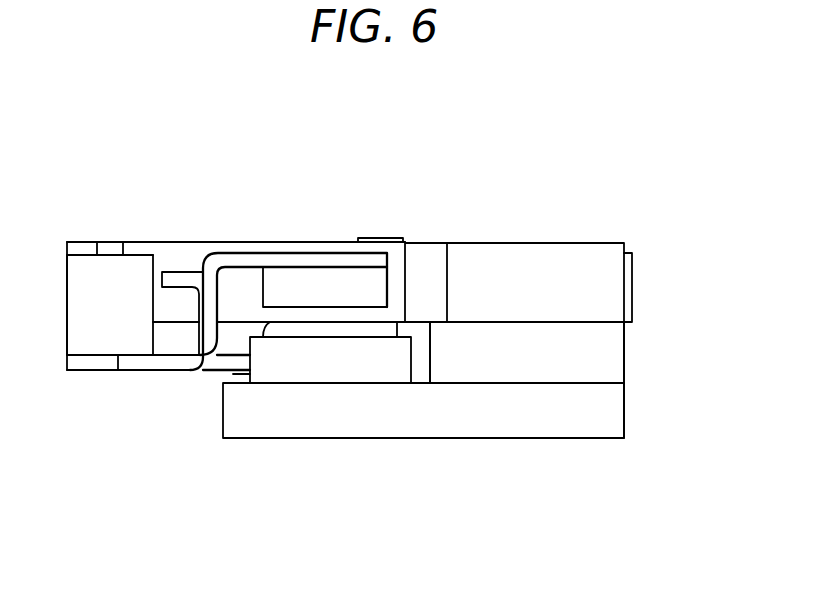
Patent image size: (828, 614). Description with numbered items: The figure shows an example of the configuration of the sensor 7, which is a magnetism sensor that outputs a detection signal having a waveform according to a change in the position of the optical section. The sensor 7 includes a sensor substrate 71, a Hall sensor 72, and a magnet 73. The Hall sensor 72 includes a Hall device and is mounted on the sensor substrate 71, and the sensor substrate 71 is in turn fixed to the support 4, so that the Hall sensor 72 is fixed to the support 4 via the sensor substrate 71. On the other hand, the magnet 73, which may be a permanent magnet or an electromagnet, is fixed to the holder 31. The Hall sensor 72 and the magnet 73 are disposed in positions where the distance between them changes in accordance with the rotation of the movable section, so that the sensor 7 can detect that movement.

The sensor 7 is at (462, 180).
The holder 31 is at (110, 280).
The magnet 73 is at (372, 282).
The Hall sensor 72 is at (248, 374).
The support 4 is at (595, 350).
The sensor substrate 71 is at (383, 438).